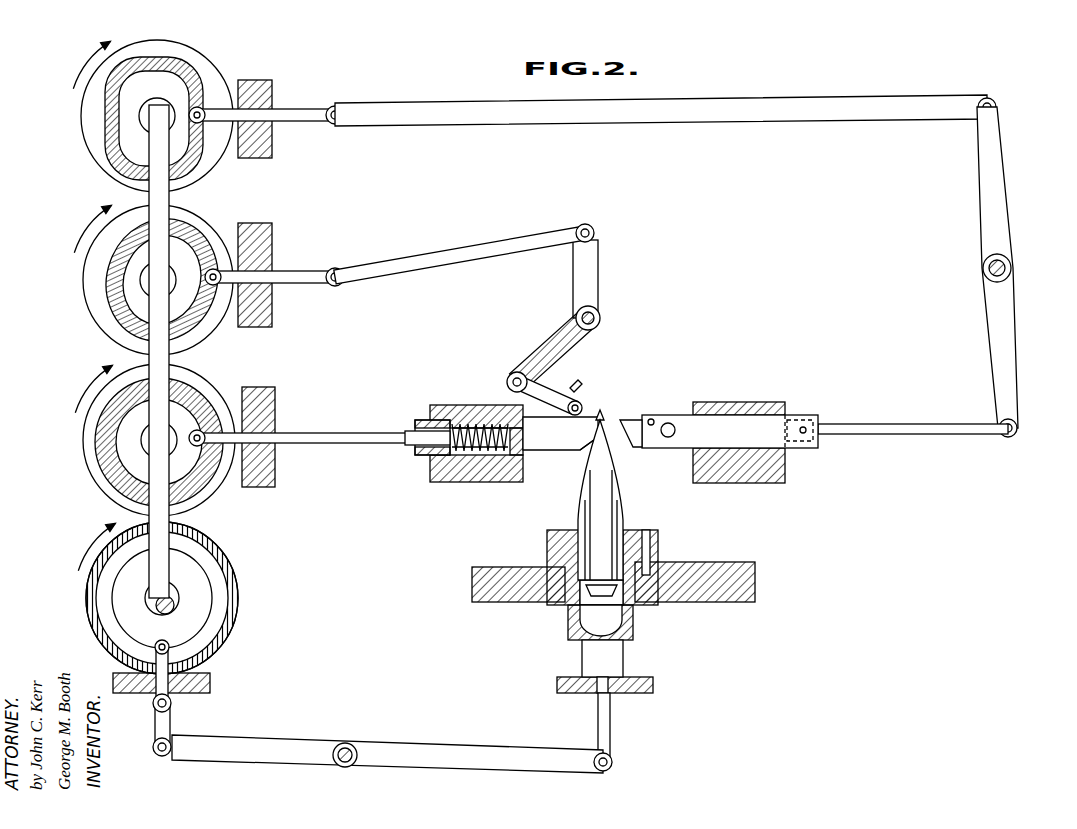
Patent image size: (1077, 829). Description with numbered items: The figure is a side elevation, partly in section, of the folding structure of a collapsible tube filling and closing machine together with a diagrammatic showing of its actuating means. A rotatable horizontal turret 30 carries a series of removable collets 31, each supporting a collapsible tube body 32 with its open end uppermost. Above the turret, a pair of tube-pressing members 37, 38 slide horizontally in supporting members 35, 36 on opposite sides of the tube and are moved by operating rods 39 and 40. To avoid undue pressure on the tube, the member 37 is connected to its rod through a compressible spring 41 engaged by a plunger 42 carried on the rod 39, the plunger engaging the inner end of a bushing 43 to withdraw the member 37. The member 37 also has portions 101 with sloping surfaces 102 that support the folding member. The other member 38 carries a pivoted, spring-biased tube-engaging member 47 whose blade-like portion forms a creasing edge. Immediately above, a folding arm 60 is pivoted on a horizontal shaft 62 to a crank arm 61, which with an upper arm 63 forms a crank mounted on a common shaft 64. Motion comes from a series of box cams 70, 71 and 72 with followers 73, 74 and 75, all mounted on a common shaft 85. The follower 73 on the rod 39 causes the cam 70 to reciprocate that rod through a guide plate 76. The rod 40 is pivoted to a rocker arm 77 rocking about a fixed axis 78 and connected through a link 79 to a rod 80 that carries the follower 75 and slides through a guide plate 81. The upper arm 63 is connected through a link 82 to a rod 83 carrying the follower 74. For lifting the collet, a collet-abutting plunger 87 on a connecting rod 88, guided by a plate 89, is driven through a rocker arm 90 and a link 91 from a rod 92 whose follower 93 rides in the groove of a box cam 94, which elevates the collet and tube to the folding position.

The turret 30 is at (735, 565).
The collet 31 is at (635, 535).
The collapsible tube body 32 is at (595, 513).
The supporting member 35 is at (480, 405).
The supporting member 36 is at (735, 402).
The tube-pressing member 37 is at (538, 452).
The tube-pressing member 38 is at (788, 455).
The operating rod 39 is at (356, 433).
The operating rod 40 is at (908, 426).
The compressible spring 41 is at (450, 430).
The plunger 42 is at (430, 420).
The bushing 43 is at (415, 428).
The tube-engaging member 47 is at (630, 425).
The folding arm 60 is at (572, 385).
The crank arm 61 is at (550, 340).
The horizontal shaft 62 is at (517, 372).
The upper arm 63 is at (600, 275).
The common shaft 64 is at (600, 322).
The box cam 70 is at (88, 439).
The box cam 71 is at (85, 286).
The box cam 72 is at (88, 127).
The follower 73 is at (206, 426).
The follower 74 is at (206, 265).
The follower 75 is at (200, 108).
The guide plate 76 is at (276, 413).
The rocker arm 77 is at (1016, 326).
The fixed axis 78 is at (1013, 268).
The link 79 is at (683, 100).
The rod 80 is at (300, 106).
The guide plate 81 is at (272, 148).
The link 82 is at (455, 240).
The rod 83 is at (300, 270).
The common shaft 85 is at (140, 356).
The collet-abutting plunger 87 is at (634, 627).
The connecting rod 88 is at (612, 726).
The guide plate 89 is at (653, 685).
The rocker arm 90 is at (376, 760).
The link 91 is at (170, 722).
The rod 92 is at (158, 690).
The follower 93 is at (152, 650).
The box cam 94 is at (88, 594).
The portion 101 is at (582, 441).
The sloping surface 102 is at (601, 412).